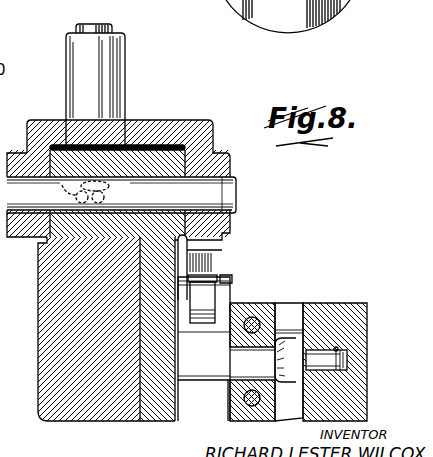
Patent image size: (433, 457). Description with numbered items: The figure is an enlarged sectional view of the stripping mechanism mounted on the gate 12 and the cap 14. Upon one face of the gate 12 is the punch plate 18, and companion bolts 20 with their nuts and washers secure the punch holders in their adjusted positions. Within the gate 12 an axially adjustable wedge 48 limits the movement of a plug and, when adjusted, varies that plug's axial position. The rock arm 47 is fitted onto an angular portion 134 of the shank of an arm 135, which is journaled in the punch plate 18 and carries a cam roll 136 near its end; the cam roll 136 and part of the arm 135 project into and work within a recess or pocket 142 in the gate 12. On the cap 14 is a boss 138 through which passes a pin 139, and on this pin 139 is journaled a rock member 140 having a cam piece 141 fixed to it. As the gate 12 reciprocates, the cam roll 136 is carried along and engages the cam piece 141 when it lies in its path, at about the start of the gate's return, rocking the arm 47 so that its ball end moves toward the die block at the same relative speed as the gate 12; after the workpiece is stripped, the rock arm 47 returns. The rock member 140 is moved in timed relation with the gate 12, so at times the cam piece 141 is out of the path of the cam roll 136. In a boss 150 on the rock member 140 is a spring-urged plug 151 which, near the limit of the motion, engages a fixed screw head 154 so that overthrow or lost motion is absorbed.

The gate 12 is at (70, 421).
The cap 14 is at (230, 218).
The punch plate 18 is at (365, 303).
The companion bolts 20 is at (251, 316).
The rock arm 47 is at (297, 399).
The wedge 48 is at (0, 100).
The angular portion 134 is at (280, 340).
The arm 135 is at (203, 367).
The cam roll 136 is at (212, 293).
The boss 138 is at (163, 157).
The pin 139 is at (236, 190).
The rock member 140 is at (161, 120).
The cam piece 141 is at (220, 268).
The recess or pocket 142 is at (165, 421).
The boss 150 is at (123, 53).
The plug 151 is at (110, 188).
The screw head 154 is at (63, 186).